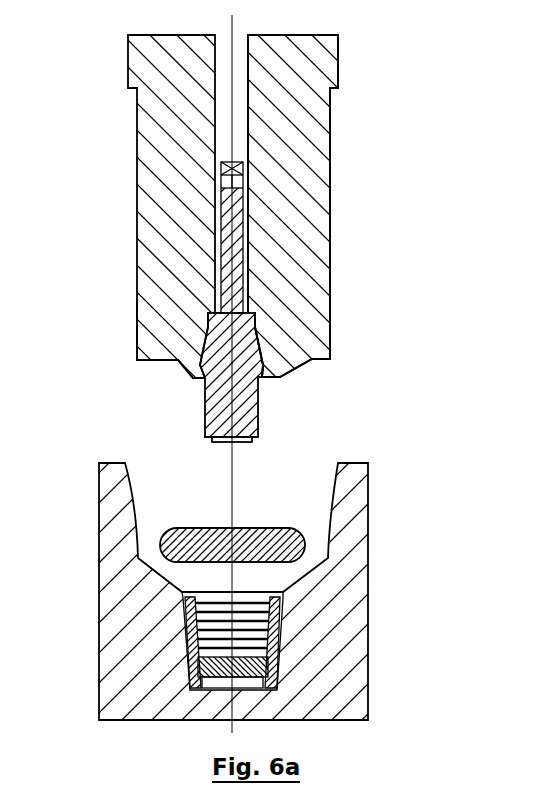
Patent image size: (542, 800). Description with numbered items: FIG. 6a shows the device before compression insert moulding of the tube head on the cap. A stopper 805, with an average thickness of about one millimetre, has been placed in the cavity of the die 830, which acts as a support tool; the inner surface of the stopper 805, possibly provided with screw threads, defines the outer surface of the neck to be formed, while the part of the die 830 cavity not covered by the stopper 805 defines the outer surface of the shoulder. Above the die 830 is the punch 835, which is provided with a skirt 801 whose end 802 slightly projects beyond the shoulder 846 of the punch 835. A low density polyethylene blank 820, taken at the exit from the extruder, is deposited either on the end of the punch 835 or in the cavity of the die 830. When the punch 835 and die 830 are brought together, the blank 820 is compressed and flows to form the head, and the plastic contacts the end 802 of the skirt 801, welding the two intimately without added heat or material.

The skirt 801 is at (335, 247).
The end of the skirt 802 is at (315, 362).
The punch 835 is at (297, 183).
The shoulder of the punch 846 is at (150, 345).
The blank 820 is at (207, 530).
The die 830 is at (362, 530).
The stopper 805 is at (190, 666).